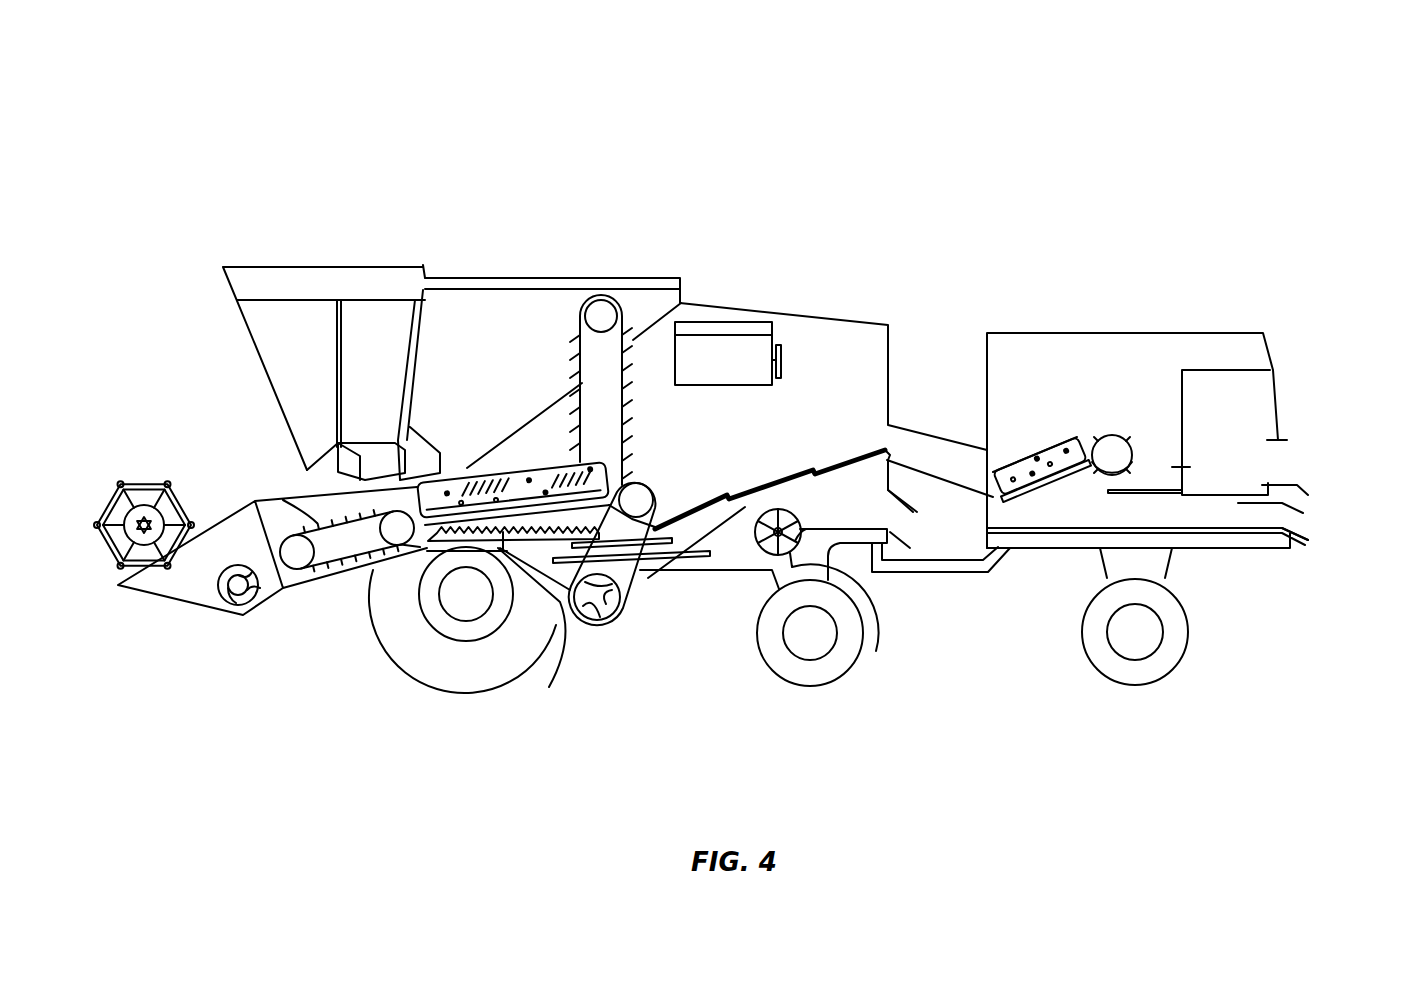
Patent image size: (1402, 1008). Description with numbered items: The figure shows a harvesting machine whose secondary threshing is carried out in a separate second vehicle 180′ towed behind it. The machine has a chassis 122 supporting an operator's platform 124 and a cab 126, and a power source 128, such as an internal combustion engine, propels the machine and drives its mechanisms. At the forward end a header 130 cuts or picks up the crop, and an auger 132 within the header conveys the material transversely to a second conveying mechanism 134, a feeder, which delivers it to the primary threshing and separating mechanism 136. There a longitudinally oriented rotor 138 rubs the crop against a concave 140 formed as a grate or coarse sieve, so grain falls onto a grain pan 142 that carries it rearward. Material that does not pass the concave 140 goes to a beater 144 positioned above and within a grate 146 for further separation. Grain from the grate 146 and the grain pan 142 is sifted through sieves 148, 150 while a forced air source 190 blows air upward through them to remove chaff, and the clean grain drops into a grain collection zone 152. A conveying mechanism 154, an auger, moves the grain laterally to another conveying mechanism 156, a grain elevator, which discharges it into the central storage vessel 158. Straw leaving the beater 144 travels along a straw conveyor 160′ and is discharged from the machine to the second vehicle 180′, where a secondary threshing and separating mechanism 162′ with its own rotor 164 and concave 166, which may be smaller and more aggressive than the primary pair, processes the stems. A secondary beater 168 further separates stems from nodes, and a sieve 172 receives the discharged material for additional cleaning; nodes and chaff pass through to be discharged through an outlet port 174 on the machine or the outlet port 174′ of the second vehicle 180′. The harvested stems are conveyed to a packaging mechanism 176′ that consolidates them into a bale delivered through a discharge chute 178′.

The chassis 122 is at (872, 323).
The operator's platform 124 is at (318, 480).
The cab 126 is at (256, 348).
The power source 128 is at (718, 322).
The header 130 is at (176, 470).
The auger 132 is at (225, 595).
The second conveying mechanism 134 is at (298, 503).
The primary threshing and separating mechanism 136 is at (545, 448).
The rotor 138 is at (482, 472).
The concave 140 is at (549, 687).
The grain pan 142 is at (380, 568).
The beater 144 is at (637, 482).
The grate 146 is at (640, 548).
The sieve 148 is at (640, 563).
The sieve 150 is at (606, 576).
The grain collection zone 152 is at (614, 642).
The conveying mechanism 154 is at (589, 627).
The conveying mechanism 156 is at (604, 298).
The central storage vessel 158 is at (489, 345).
The straw conveyor 160′ is at (692, 503).
The secondary threshing and separating mechanism 162′ is at (1057, 420).
The rotor 164 is at (1000, 470).
The concave 166 is at (748, 512).
The secondary beater 168 is at (1110, 437).
The sieve 172 is at (1153, 488).
The outlet port 174 is at (915, 535).
The outlet port 174′ is at (1312, 523).
The packaging mechanism 176′ is at (1228, 368).
The discharge chute 178′ is at (1293, 458).
The second vehicle 180′ is at (1050, 634).
The forced air source 190 is at (876, 651).